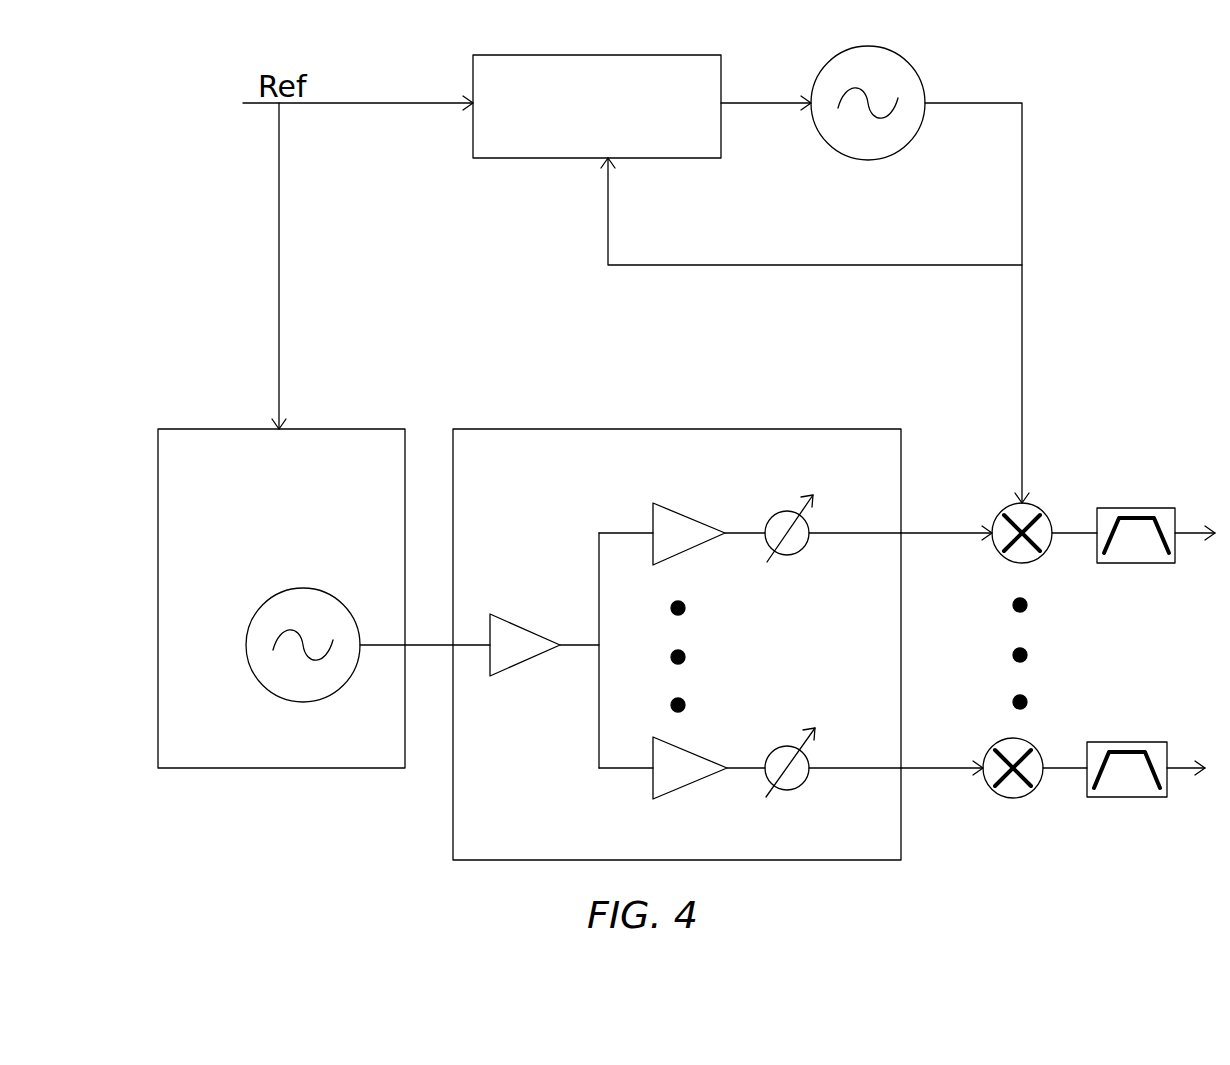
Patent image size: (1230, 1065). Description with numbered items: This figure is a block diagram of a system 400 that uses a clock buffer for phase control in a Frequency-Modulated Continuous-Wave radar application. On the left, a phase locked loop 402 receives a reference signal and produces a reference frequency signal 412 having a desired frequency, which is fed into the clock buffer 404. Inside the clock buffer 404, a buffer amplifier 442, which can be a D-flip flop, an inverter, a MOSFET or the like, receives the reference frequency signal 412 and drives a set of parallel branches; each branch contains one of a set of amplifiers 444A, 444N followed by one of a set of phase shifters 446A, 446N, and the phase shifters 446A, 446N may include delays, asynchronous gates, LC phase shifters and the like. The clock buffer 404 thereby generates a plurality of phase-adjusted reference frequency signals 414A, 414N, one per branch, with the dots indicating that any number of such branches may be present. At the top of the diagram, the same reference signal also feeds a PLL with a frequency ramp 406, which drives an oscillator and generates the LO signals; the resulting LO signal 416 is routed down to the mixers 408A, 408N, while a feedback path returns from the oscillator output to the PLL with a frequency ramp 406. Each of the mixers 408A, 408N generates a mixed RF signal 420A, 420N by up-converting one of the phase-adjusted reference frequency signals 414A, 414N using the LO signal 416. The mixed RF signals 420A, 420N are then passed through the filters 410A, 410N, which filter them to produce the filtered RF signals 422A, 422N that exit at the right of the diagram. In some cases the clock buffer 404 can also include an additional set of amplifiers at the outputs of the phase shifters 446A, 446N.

The system 400 is at (1063, 65).
The phase locked loop 402 is at (372, 429).
The clock buffer 404 is at (660, 429).
The PLL with frequency ramp 406 is at (598, 55).
The mixer 408A is at (1045, 506).
The mixer 408N is at (1038, 742).
The filter 410A is at (1140, 508).
The filter 410N is at (1125, 742).
The PLL output clock signal 412 is at (428, 645).
The buffered clock signal 414A is at (933, 535).
The buffered clock signal 414N is at (930, 770).
The ramp signal 416 is at (1022, 300).
The mixed RF signal 420A is at (1068, 535).
The mixed RF signal 420N is at (1060, 770).
The filtered RF signal 422A is at (1185, 535).
The filtered RF signal 422N is at (1178, 770).
The buffer amplifier 442 is at (512, 665).
The amplifier 444A is at (708, 541).
The amplifier 444N is at (705, 777).
The phase shifter 446A is at (788, 556).
The phase shifter 446N is at (787, 791).